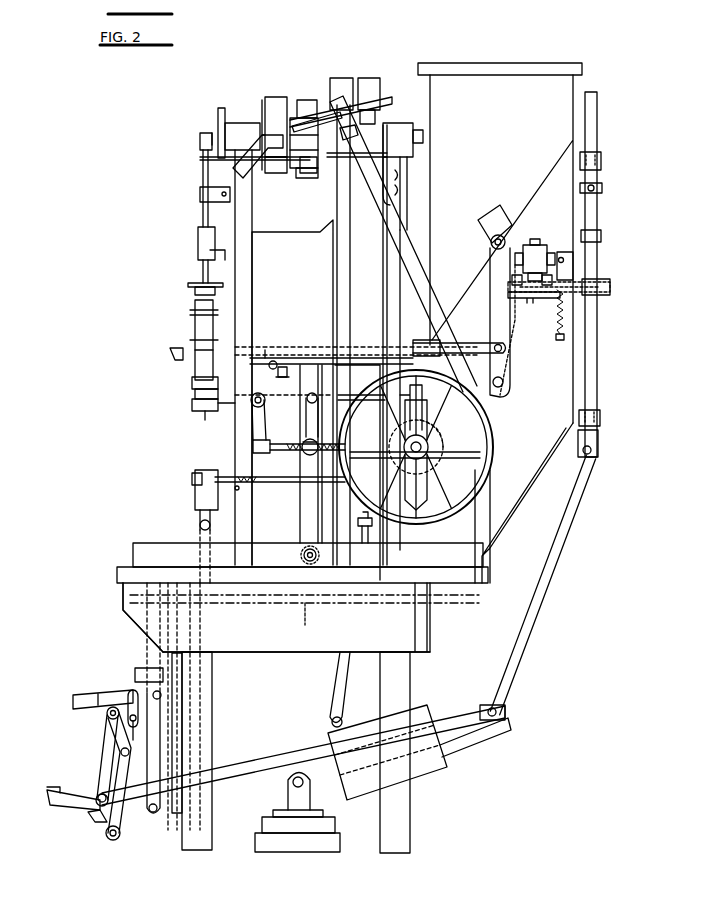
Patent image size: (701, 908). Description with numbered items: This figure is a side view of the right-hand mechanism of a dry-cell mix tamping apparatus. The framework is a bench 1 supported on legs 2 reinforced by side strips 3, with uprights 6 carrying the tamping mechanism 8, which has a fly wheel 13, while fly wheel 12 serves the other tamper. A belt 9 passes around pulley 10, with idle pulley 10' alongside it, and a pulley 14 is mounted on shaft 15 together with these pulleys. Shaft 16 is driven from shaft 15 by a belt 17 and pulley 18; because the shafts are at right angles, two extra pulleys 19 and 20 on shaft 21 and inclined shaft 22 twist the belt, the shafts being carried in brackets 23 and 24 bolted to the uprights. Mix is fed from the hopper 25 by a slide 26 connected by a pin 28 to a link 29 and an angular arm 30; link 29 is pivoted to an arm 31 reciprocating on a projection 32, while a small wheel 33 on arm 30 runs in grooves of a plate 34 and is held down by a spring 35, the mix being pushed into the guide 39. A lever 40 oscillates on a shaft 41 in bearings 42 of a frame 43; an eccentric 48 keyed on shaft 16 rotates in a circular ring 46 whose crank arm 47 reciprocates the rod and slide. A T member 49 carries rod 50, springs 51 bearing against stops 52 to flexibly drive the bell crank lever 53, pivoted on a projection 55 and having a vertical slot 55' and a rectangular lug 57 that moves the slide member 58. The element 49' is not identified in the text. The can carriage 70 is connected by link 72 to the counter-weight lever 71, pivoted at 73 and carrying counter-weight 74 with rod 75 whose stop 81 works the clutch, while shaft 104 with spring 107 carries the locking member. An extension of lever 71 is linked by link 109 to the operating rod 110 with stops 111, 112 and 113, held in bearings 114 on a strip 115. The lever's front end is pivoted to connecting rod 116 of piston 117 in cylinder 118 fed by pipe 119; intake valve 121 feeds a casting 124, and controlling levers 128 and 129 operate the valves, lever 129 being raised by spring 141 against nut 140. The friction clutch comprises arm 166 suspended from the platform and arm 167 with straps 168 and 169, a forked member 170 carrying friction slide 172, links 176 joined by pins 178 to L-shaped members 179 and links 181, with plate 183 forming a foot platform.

The bench 1 is at (358, 578).
The legs 2 is at (410, 679).
The side strips 3 is at (296, 646).
The uprights 6 is at (253, 253).
The tamping mechanism 8 is at (198, 250).
The belt 9 is at (276, 97).
The pulley 10 is at (249, 120).
The idle pulley 10' is at (309, 96).
The fly wheel 12 is at (342, 78).
The fly wheel 13 is at (370, 78).
The pulley 14 is at (352, 130).
The shaft 15 is at (304, 143).
The shaft 16 is at (428, 452).
The belt 17 is at (413, 260).
The pulley 18 is at (493, 428).
The extra pulley 19 is at (368, 190).
The extra pulley 20 is at (372, 96).
The shaft 21 is at (312, 178).
The shaft 22 is at (317, 100).
The bracket 23 is at (255, 165).
The bracket 24 is at (394, 152).
The hopper 25 is at (292, 392).
The slide 26 is at (310, 345).
The pin 28 is at (428, 341).
The link 29 is at (461, 343).
The angular arm 30 is at (360, 472).
The arm 31 is at (508, 325).
The projection 32 is at (506, 222).
The small wheel 33 is at (272, 368).
The plate 34 is at (265, 350).
The spring 35 is at (287, 374).
The guide 39 is at (178, 355).
The lever 40 is at (308, 498).
The shaft 41 is at (320, 557).
The bearings 42 is at (300, 556).
The frame 43 is at (308, 555).
The circular ring 46 is at (443, 433).
The crank arm 47 is at (392, 430).
The eccentric 48 is at (441, 428).
The T member 49 is at (306, 458).
The block 49' is at (180, 404).
The rod 50 is at (290, 440).
The spring 51 is at (302, 440).
The stop 52 is at (260, 453).
The bell crank lever 53 is at (266, 418).
The projection 55 is at (274, 395).
The vertical slot 55' is at (200, 421).
The rectangular lug 57 is at (203, 415).
The slide member 58 is at (192, 383).
The can carriage 70 is at (195, 494).
The counter-weight lever 71 is at (262, 785).
The connecting link 72 is at (200, 712).
The pivot 73 is at (300, 778).
The counter-weight 74 is at (440, 770).
The rod 75 is at (348, 685).
The stop 81 is at (358, 520).
The shaft 104 is at (328, 485).
The spring 107 is at (258, 483).
The link 109 is at (528, 645).
The operating rod 110 is at (597, 378).
The stop 111 is at (602, 188).
The stop 112 is at (601, 236).
The stop 113 is at (600, 302).
The bearings 114 is at (601, 160).
The strip 115 is at (512, 505).
The connecting rod 116 is at (182, 740).
The piston 117 is at (177, 678).
The cylinder 118 is at (205, 625).
The pipe 119 is at (313, 623).
The intake valve 121 is at (541, 248).
The casting 124 is at (573, 262).
The controlling lever 128 is at (608, 285).
The controlling lever 129 is at (611, 290).
The nut 140 is at (558, 322).
The spring 141 is at (526, 350).
The arm 166 is at (140, 603).
The arm 167 is at (150, 790).
The strap 168 is at (135, 670).
The strap 169 is at (136, 738).
The forked member 170 is at (103, 690).
The friction contact slide 172 is at (133, 690).
The link 176 is at (112, 735).
The pin 178 is at (107, 716).
The L-shaped member 179 is at (106, 766).
The link 181 is at (105, 835).
The foot platform plate 183 is at (48, 790).